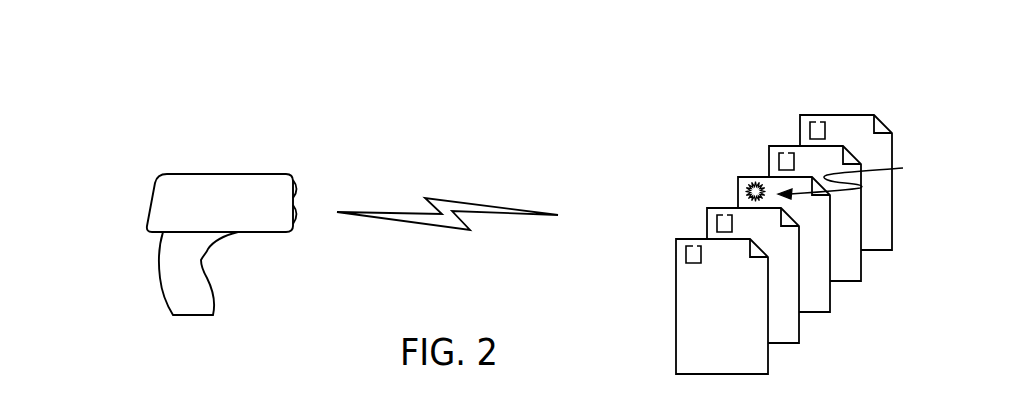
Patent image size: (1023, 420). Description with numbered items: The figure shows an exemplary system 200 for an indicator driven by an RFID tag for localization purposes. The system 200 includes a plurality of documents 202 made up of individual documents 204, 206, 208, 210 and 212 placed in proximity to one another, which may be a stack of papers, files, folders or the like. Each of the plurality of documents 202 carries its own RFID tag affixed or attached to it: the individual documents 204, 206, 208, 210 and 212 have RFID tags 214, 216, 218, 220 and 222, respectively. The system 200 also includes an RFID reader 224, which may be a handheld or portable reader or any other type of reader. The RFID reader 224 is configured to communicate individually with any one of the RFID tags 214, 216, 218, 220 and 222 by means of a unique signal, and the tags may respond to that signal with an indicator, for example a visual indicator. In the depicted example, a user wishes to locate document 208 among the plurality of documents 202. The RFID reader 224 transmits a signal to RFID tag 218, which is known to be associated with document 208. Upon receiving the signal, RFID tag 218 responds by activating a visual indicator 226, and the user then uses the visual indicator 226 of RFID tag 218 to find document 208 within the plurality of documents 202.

The system 200 is at (138, 100).
The plurality of documents 202 is at (692, 135).
The document 204 is at (763, 358).
The document 206 is at (794, 327).
The document 208 is at (825, 296).
The document 210 is at (856, 265).
The document 212 is at (887, 234).
The RFID tag 214 is at (693, 246).
The RFID tag 216 is at (723, 215).
The RFID tag 218 is at (755, 182).
The RFID tag 220 is at (784, 153).
The RFID tag 222 is at (816, 122).
The RFID reader 224 is at (223, 183).
The visual indicator 226 is at (864, 175).